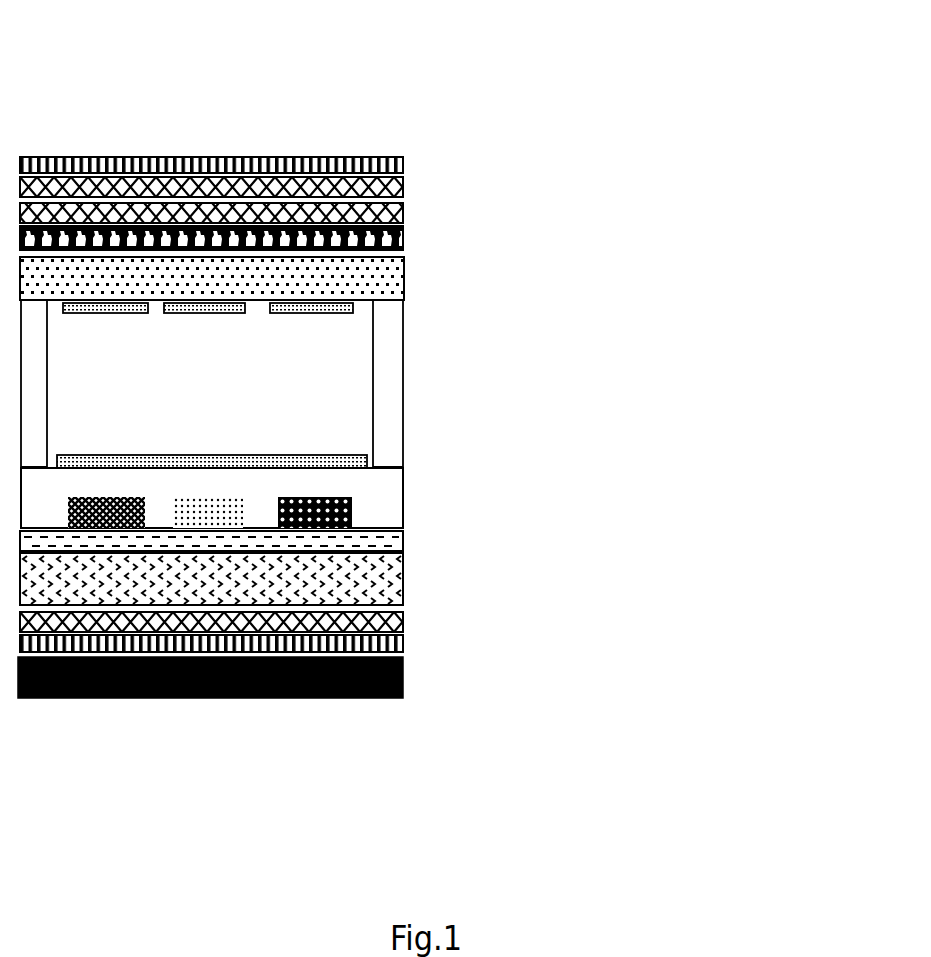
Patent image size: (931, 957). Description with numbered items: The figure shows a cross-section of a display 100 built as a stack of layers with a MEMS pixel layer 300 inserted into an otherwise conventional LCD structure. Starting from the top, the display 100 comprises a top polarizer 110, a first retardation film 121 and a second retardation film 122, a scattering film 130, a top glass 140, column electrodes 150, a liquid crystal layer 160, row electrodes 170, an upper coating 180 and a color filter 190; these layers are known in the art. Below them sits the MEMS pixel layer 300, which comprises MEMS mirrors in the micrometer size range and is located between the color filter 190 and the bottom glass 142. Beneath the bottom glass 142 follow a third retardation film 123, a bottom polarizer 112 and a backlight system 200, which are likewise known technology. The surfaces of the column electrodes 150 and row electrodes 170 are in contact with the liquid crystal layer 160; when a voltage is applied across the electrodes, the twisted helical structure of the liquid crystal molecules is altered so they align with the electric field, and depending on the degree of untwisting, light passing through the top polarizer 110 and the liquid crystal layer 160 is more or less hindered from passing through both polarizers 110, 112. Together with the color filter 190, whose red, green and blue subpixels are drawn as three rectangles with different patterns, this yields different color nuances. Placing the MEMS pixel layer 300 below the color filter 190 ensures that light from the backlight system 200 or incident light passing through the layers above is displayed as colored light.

The display 100 is at (162, 127).
The top polarizer 110 is at (405, 163).
The first retardation film 121 is at (405, 188).
The second retardation film 122 is at (405, 214).
The scattering film 130 is at (405, 241).
The top glass 140 is at (407, 281).
The column electrodes 150 is at (335, 318).
The liquid crystal layer 160 is at (332, 390).
The row electrodes 170 is at (345, 449).
The upper coating 180 is at (405, 475).
The color filter 190 is at (217, 510).
The MEMS pixel layer 300 is at (405, 543).
The bottom glass 142 is at (405, 588).
The third retardation film 123 is at (405, 625).
The bottom polarizer 112 is at (407, 655).
The backlight system 200 is at (407, 673).